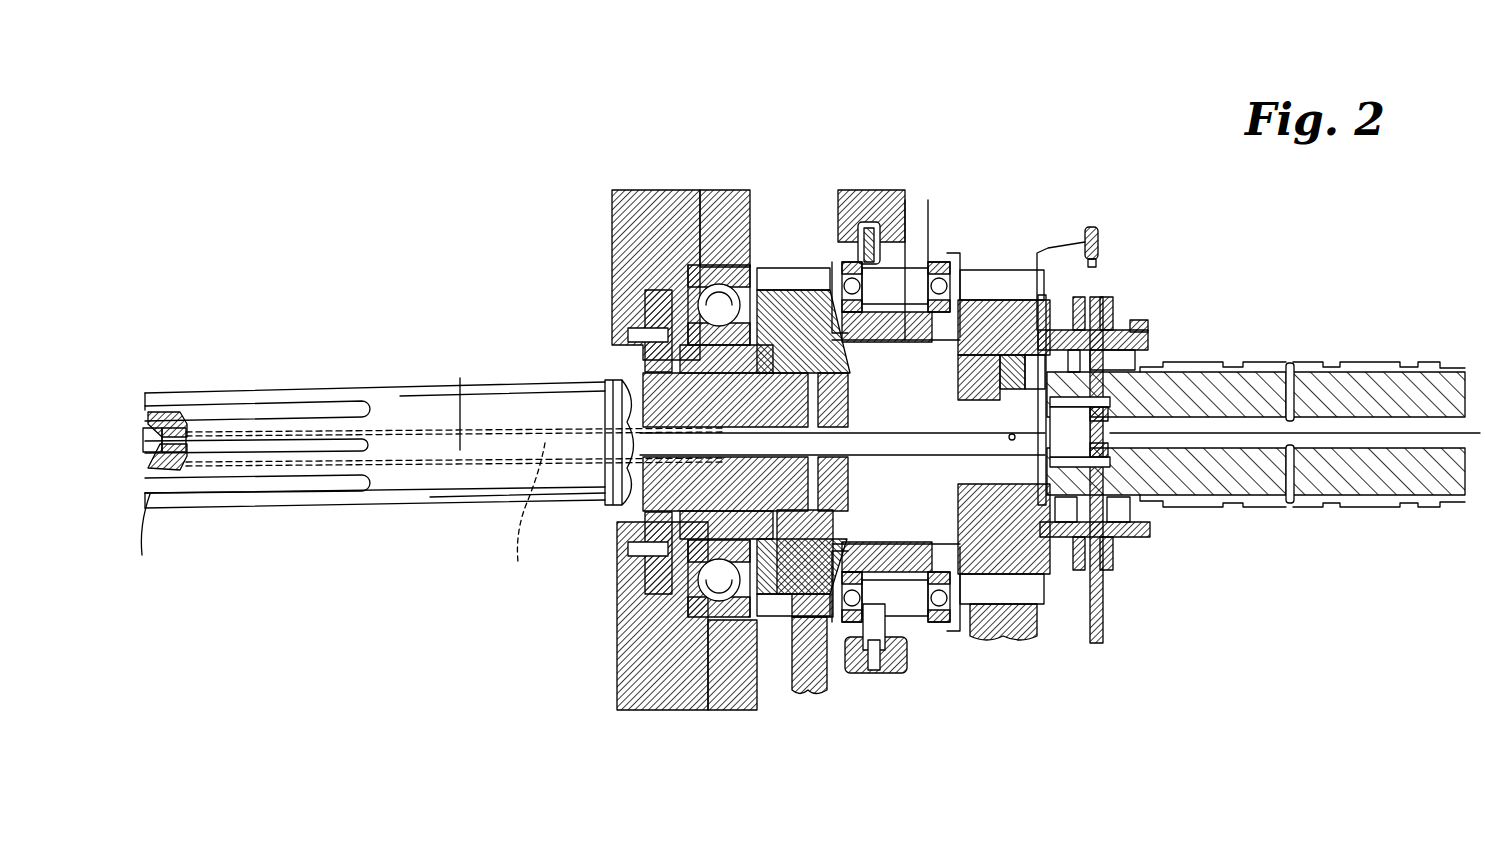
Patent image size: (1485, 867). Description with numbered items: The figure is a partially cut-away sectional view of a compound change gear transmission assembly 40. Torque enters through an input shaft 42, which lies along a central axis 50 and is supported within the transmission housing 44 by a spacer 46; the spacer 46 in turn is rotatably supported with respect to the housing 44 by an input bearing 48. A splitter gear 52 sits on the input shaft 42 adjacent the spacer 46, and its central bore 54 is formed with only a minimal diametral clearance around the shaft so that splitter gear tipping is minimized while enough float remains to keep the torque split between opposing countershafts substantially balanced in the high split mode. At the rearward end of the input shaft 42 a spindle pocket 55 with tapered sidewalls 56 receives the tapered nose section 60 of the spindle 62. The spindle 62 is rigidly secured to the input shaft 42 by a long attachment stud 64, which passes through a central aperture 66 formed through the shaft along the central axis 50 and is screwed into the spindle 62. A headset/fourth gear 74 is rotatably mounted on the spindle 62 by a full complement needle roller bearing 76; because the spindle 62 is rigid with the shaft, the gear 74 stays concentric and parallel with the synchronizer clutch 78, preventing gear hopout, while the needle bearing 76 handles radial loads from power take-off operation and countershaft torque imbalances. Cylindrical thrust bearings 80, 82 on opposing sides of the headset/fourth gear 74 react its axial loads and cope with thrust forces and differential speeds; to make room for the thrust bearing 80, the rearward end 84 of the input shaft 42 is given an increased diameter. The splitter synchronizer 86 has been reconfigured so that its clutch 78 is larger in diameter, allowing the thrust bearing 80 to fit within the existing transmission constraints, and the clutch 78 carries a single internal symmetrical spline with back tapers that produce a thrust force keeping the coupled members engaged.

The compound change gear transmission assembly 40 is at (425, 624).
The input shaft 42 is at (490, 500).
The transmission housing 44 is at (702, 212).
The spacer 46 is at (650, 555).
The input bearing 48 is at (712, 600).
The central axis 50 is at (460, 378).
The splitter gear 52 is at (748, 222).
The central bore 54 is at (788, 497).
The spindle pocket 55 is at (842, 405).
The tapered sidewalls 56 is at (865, 402).
The tapered nose section 60 is at (870, 475).
The spindle 62 is at (1000, 600).
The attachment stud 64 is at (455, 455).
The central aperture 66 is at (524, 516).
The headset/fourth gear 74 is at (990, 280).
The full complement needle roller bearing 76 is at (1010, 380).
The synchronizer clutch 78 is at (903, 242).
The cylindrical thrust bearing 80 is at (985, 540).
The cylindrical thrust bearing 82 is at (1040, 605).
The rearward end of the input shaft 84 is at (802, 500).
The splitter synchronizer 86 is at (888, 160).